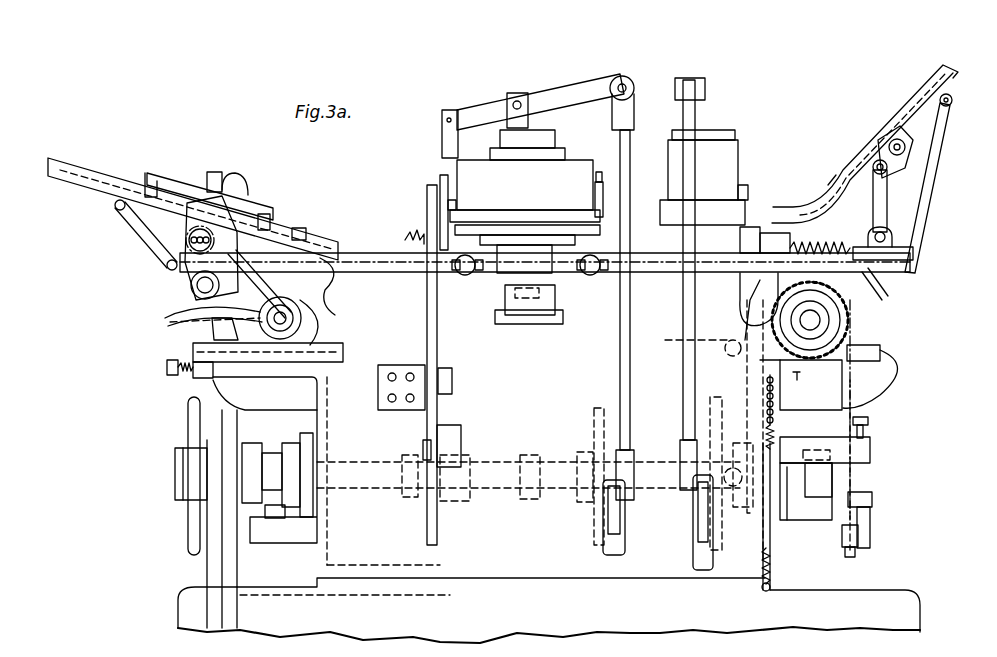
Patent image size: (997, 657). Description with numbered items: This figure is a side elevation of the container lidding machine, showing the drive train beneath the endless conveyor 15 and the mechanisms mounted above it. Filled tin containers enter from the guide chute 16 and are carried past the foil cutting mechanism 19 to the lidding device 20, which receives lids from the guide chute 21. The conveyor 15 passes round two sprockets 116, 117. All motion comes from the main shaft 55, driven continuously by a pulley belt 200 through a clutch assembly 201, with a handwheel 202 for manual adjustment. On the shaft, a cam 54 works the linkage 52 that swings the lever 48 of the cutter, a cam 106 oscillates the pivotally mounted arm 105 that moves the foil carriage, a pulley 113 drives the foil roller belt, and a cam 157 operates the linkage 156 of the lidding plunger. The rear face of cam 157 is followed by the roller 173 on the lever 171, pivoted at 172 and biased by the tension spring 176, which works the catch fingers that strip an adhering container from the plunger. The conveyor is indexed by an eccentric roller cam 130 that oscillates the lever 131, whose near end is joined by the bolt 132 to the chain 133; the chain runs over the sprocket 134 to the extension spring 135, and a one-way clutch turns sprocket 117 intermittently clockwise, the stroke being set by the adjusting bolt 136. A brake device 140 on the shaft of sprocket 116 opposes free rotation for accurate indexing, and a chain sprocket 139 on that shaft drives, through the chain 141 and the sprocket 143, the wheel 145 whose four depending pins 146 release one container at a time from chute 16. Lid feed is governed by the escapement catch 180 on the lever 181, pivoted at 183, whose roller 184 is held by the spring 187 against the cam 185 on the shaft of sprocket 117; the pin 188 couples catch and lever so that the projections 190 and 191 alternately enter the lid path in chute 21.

The endless conveyor 15 is at (372, 272).
The guide chute 16 is at (322, 240).
The foil cutting mechanism 19 is at (505, 90).
The lidding device 20 is at (735, 128).
The guide chute 21 is at (940, 72).
The lever 48 is at (586, 98).
The linkage 52 is at (631, 300).
The cam 54 is at (600, 536).
The main shaft 55 is at (542, 490).
The pivotally mounted arm 105 is at (437, 343).
The cam 106 is at (460, 508).
The pulley 113 is at (412, 506).
The conveyor sprocket 116 is at (335, 292).
The conveyor sprocket 117 is at (755, 300).
The eccentric roller cam 130 is at (872, 495).
The lever 131 is at (870, 526).
The bolt 132 is at (855, 553).
The chain 133 is at (855, 410).
The sprocket 134 is at (885, 356).
The extension spring 135 is at (774, 562).
The adjusting bolt 136 is at (868, 427).
The chain sprocket 139 is at (210, 316).
The brake device 140 is at (300, 320).
The chain 141 is at (192, 283).
The sprocket 143 is at (190, 238).
The wheel 145 is at (188, 178).
The depending pins 146 is at (150, 188).
The linkage 156 is at (705, 365).
The cam 157 is at (726, 520).
The lever 171 is at (710, 392).
The pivot 172 is at (690, 343).
The roller 173 is at (700, 505).
The tension spring 176 is at (828, 246).
The escapement catch 180 is at (905, 148).
The lever 181 is at (888, 215).
The pivot 183 is at (893, 242).
The roller 184 is at (850, 320).
The cam 185 is at (791, 410).
The spring 187 is at (895, 288).
The pin 188 is at (892, 170).
The projection 190 is at (897, 138).
The projection 191 is at (874, 160).
The pulley belt 200 is at (220, 566).
The clutch assembly 201 is at (256, 458).
The handwheel 202 is at (190, 530).